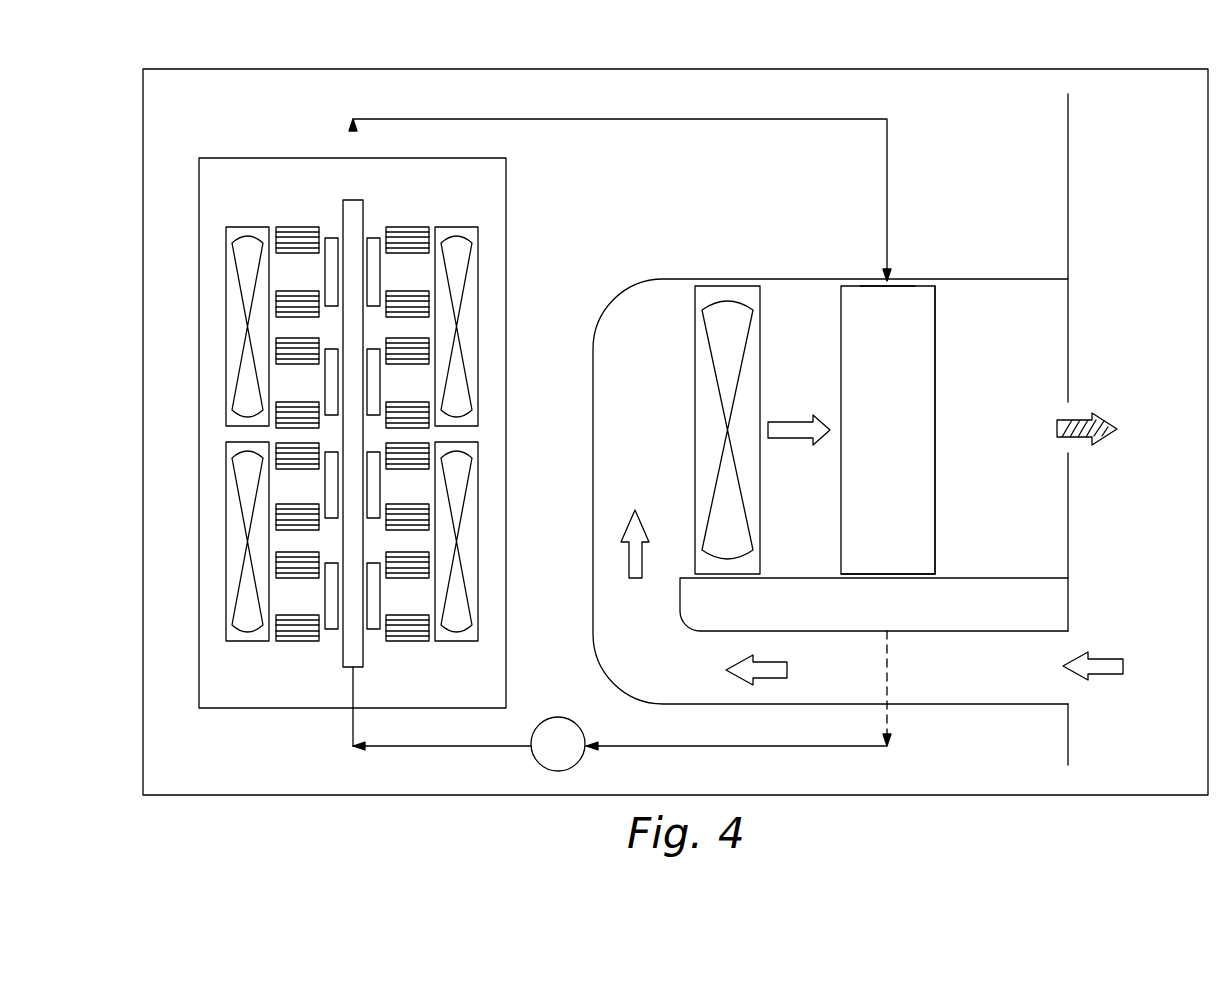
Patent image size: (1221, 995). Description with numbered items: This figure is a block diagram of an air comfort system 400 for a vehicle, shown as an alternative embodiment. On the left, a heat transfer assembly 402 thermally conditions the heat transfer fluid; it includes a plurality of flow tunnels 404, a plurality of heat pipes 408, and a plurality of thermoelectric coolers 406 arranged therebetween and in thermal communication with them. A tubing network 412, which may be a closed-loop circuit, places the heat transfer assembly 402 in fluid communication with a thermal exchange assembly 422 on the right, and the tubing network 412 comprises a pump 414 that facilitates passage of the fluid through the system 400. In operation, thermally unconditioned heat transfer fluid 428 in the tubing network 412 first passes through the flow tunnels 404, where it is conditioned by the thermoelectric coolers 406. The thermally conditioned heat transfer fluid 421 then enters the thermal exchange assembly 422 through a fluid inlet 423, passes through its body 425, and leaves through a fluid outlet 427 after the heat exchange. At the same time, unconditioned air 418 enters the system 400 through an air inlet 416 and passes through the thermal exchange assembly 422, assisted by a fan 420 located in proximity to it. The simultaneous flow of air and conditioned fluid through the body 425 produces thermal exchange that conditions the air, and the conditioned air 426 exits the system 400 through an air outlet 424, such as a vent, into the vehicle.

The air comfort system 400 is at (222, 52).
The heat transfer assembly 402 is at (272, 157).
The flow tunnels 404 is at (355, 200).
The thermoelectric coolers 406 is at (325, 238).
The heat pipes 408 is at (410, 228).
The tubing network 412 is at (321, 757).
The pump 414 is at (553, 717).
The air inlet 416 is at (1070, 688).
The air 418 is at (787, 420).
The fan 420 is at (693, 396).
The thermally conditioned heat transfer fluid 421 is at (725, 119).
The thermal exchange assembly 422 is at (952, 339).
The fluid inlet 423 is at (885, 280).
The air outlet 424 is at (1068, 410).
The body 425 is at (937, 516).
The conditioned air 426 is at (1057, 429).
The fluid outlet 427 is at (887, 576).
The heat transfer fluid 428 is at (720, 746).